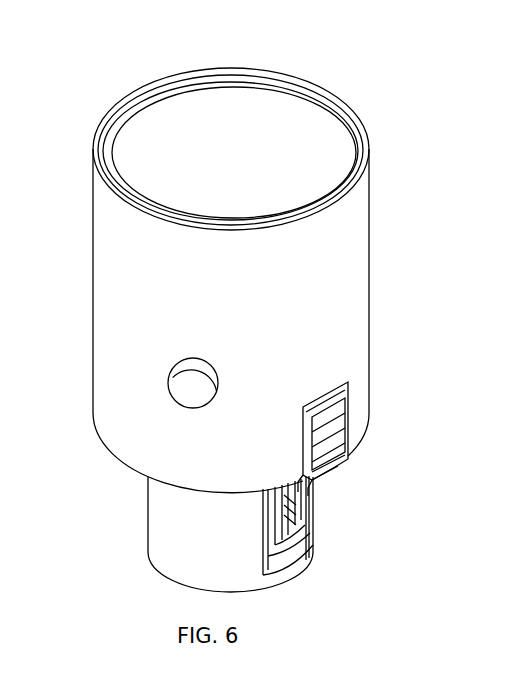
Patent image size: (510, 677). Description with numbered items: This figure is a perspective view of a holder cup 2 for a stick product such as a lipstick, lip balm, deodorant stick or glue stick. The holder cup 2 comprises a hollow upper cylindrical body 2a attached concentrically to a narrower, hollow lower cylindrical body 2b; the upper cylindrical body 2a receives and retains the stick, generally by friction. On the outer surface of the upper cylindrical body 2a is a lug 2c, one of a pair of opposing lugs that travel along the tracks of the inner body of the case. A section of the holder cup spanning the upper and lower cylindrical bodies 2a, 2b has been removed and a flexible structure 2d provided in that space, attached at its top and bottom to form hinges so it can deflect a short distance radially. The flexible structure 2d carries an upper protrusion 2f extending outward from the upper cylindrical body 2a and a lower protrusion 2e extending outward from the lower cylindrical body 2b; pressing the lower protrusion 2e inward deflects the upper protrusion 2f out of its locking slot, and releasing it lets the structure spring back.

The holder cup 2 is at (372, 115).
The upper cylindrical body 2a is at (120, 257).
The lower cylindrical body 2b is at (165, 518).
The lug 2c is at (183, 392).
The flexible structure 2d is at (335, 425).
The lower protrusion 2e is at (293, 505).
The upper protrusion 2f is at (337, 463).